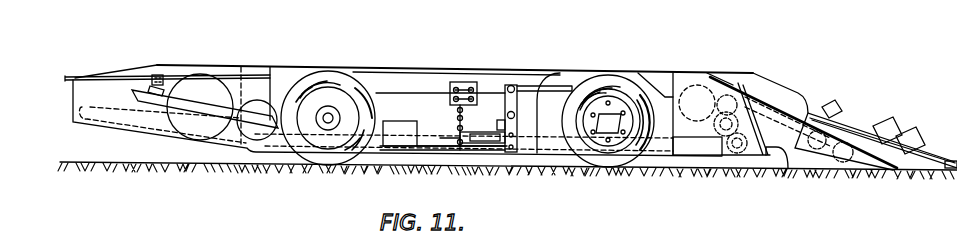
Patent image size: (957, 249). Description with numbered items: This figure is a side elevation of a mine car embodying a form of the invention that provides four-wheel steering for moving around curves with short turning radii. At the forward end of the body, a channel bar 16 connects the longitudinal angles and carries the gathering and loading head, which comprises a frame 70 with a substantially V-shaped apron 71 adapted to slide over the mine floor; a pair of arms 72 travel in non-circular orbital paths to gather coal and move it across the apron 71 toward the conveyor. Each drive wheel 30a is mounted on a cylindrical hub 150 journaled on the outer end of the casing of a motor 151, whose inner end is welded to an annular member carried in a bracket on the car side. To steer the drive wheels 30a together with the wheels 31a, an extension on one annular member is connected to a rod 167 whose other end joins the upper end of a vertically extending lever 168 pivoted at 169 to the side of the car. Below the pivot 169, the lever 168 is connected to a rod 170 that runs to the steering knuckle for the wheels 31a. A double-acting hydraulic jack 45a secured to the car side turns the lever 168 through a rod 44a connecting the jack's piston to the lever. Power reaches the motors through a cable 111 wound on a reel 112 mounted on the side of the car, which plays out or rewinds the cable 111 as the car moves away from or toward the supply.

The cable 111 is at (128, 55).
The reel 112 is at (218, 83).
The wheels 31a is at (325, 156).
The hydraulic jack 45a is at (470, 133).
The rod 170 is at (408, 153).
The rod 44a is at (505, 152).
The pivot 169 is at (509, 112).
The lever 168 is at (512, 86).
The rod 167 is at (540, 92).
The drive wheels 30a is at (602, 84).
The cylindrical hub 150 is at (608, 146).
The motor 151 is at (608, 123).
The channel bar 16 is at (776, 163).
The frame 70 is at (818, 165).
The apron 71 is at (897, 168).
The arms 72 is at (925, 155).